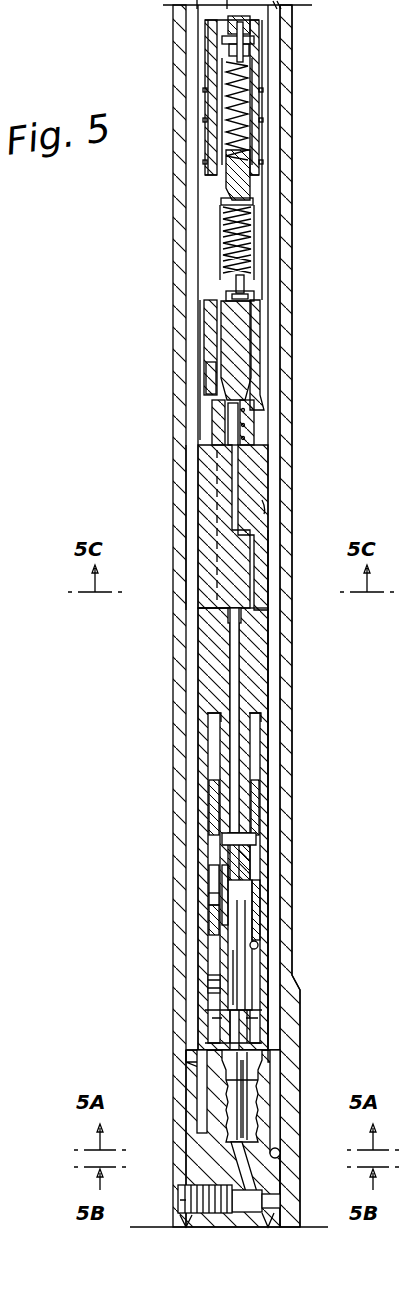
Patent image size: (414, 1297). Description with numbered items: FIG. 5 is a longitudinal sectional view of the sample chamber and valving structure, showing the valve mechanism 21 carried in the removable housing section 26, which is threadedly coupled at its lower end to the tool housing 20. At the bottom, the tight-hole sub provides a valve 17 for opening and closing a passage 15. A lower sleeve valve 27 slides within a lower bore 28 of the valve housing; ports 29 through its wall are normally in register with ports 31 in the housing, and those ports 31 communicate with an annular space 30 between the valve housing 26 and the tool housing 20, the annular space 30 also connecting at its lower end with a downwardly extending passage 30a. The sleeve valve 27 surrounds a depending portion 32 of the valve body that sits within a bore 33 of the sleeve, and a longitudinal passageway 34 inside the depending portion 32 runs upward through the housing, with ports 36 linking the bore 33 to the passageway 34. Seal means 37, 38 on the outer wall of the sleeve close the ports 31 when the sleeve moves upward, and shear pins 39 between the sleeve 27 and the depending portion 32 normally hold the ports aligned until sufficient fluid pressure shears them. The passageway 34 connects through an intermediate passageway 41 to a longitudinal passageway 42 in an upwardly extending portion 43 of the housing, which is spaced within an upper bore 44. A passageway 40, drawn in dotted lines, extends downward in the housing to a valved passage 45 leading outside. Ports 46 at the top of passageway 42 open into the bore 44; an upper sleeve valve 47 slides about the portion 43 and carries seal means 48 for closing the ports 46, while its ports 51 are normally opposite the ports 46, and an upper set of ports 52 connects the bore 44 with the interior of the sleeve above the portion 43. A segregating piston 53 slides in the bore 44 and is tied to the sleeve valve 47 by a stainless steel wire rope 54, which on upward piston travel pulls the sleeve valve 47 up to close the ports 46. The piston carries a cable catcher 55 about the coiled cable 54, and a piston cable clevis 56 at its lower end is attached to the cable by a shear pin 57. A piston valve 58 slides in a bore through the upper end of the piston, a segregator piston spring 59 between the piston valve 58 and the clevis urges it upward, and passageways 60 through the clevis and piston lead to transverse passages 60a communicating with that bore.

The passage 15 is at (252, 1180).
The valve 17 is at (222, 1183).
The tool housing 20 is at (276, 1083).
The valve mechanism 21 is at (275, 507).
The removable housing section 26 is at (262, 728).
The lower sleeve valve 27 is at (262, 920).
The lower bore 28 is at (212, 752).
The ports 29 is at (214, 897).
The annular space 30 is at (282, 661).
The downwardly extending passage 30a is at (292, 1070).
The ports 31 is at (214, 880).
The depending portion 32 is at (214, 730).
The bore 33 is at (258, 946).
The longitudinal passageway 34 is at (240, 745).
The ports 36 is at (244, 836).
The seal means 37 is at (214, 918).
The seal means 38 is at (213, 982).
The shear pins 39 is at (256, 886).
The passageway 40 is at (213, 465).
The intermediate passageway 41 is at (258, 605).
The longitudinal passageway 42 is at (232, 422).
The upwardly extending portion 43 is at (242, 410).
The upper bore 44 is at (252, 335).
The valved passage 45 is at (213, 598).
The ports 46 is at (256, 378).
The upper sleeve valve 47 is at (208, 322).
The seal means 48 is at (214, 410).
The ports 51 is at (206, 364).
The upper set of ports 52 is at (255, 298).
The segregating piston 53 is at (262, 50).
The connecting means (wire rope) 54 is at (256, 272).
The cable catcher 55 is at (252, 226).
The piston cable clevis 56 is at (252, 188).
The shear pin 57 is at (250, 205).
The piston valve 58 is at (250, 20).
The segregator piston spring 59 is at (247, 75).
The passageways 60 is at (244, 60).
The transverse passages 60a is at (253, 34).